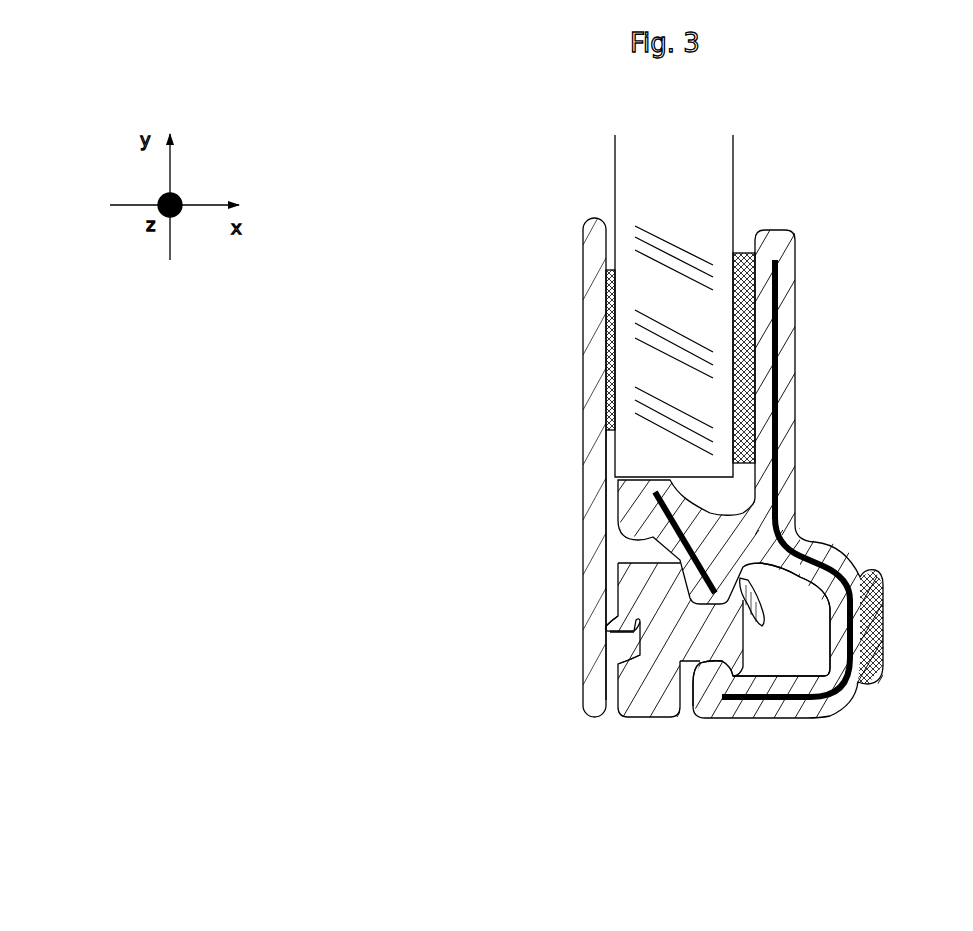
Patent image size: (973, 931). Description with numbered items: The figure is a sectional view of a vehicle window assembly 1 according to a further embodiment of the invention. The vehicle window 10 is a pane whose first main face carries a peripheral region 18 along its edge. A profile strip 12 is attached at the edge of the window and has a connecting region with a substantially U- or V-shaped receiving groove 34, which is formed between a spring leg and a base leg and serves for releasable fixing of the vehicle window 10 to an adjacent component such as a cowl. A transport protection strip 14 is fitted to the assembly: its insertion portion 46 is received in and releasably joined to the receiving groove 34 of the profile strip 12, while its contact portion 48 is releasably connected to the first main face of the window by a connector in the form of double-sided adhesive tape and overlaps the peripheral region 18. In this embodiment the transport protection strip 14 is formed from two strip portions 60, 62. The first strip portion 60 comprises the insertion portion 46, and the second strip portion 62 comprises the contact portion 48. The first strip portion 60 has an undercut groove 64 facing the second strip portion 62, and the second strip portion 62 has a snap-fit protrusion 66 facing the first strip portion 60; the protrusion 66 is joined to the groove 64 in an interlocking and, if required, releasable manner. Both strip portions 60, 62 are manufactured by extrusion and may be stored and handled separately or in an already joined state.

The window arrangement 1 is at (450, 160).
The vehicle window 10 is at (747, 124).
The profile strip 12 is at (838, 318).
The transport protection strip 14 is at (520, 747).
The peripheral region 18 is at (681, 216).
The receiving groove 34 is at (799, 645).
The insertion portion 46 is at (702, 657).
The contact portion 48 is at (560, 370).
The first strip portion 60 is at (660, 673).
The second strip portion 62 is at (595, 478).
The undercut groove 64 is at (623, 655).
The snap-fit protrusion 66 is at (628, 640).